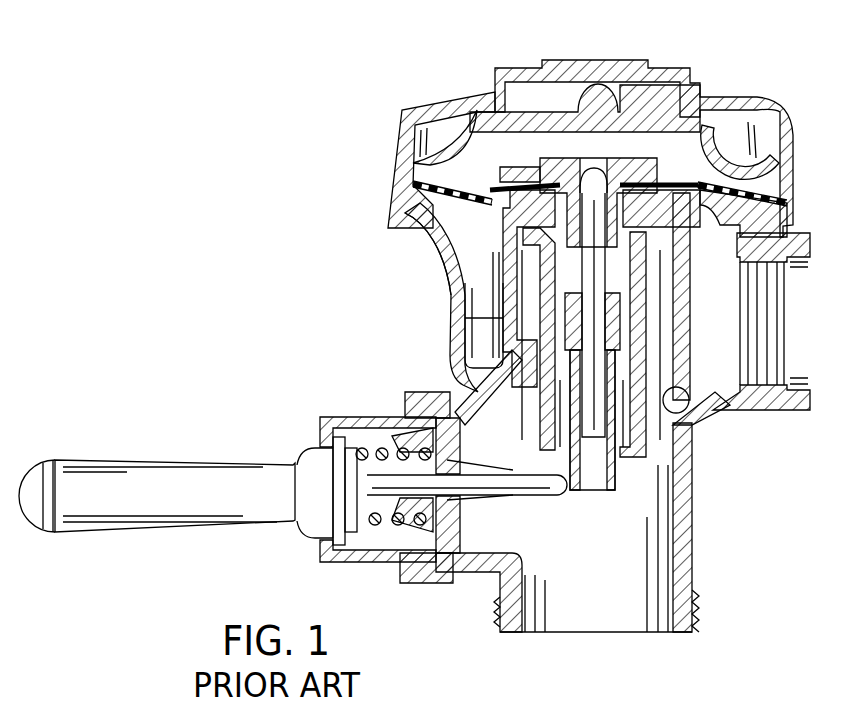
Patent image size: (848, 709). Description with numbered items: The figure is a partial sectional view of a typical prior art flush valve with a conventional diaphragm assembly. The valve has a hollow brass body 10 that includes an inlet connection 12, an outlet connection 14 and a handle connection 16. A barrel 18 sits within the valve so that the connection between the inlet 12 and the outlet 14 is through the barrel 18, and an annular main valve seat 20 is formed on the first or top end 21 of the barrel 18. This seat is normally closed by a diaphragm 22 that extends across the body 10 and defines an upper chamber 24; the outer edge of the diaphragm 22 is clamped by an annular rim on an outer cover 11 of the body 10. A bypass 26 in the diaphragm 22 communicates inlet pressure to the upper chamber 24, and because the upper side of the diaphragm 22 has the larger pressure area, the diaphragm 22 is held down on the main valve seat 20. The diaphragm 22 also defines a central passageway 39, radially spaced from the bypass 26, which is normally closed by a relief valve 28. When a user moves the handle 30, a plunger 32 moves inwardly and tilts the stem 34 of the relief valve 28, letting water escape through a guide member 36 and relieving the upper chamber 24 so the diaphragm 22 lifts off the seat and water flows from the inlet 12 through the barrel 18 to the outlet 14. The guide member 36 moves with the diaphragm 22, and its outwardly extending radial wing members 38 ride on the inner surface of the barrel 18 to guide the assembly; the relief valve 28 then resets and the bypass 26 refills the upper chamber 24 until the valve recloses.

The hollow body 10 is at (705, 558).
The outer cover 11 is at (410, 185).
The inlet connection 12 is at (777, 320).
The outlet connection 14 is at (633, 633).
The handle connection 16 is at (448, 574).
The barrel 18 is at (455, 326).
The annular main valve seat 20 is at (708, 215).
The first or top end 21 is at (480, 218).
The diaphragm 22 is at (790, 203).
The upper chamber 24 is at (497, 147).
The bypass 26 is at (428, 248).
The relief valve 28 is at (645, 158).
The handle 30 is at (141, 460).
The plunger 32 is at (546, 497).
The stem 34 is at (622, 494).
The guide member 36 is at (533, 416).
The radial wing members 38 is at (697, 424).
The central passageway 39 is at (540, 190).